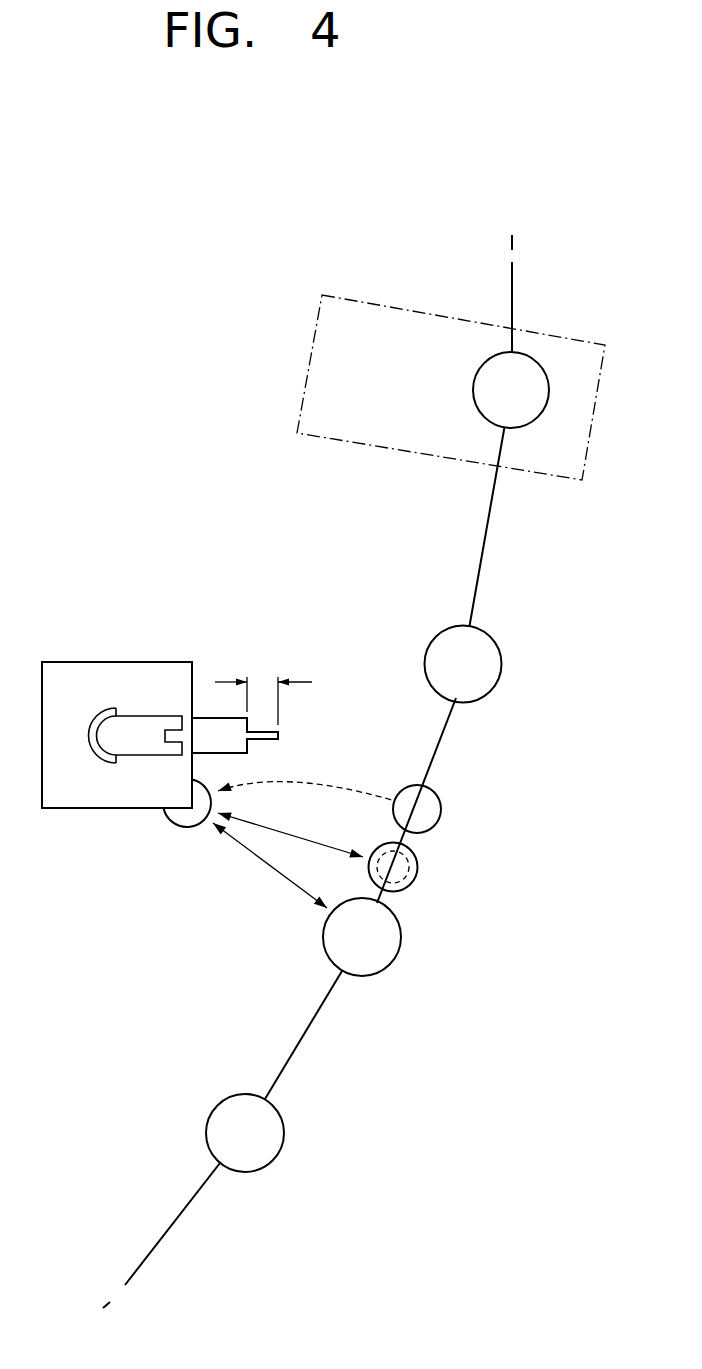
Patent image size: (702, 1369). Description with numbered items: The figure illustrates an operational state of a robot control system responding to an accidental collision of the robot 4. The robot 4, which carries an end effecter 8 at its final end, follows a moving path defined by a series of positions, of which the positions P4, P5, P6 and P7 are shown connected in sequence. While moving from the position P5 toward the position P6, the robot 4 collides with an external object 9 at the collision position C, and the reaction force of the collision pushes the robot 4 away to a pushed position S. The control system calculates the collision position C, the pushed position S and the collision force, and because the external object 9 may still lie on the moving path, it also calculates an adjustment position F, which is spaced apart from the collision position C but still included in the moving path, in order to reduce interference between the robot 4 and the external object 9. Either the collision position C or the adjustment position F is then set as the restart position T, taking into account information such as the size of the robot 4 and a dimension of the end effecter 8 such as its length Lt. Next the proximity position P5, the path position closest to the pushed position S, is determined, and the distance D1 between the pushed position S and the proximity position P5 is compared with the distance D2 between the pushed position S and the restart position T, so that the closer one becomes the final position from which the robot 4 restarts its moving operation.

The robot 4 is at (60, 650).
The end effecter 8 is at (268, 736).
The external object 9 is at (312, 342).
The pushed position S is at (185, 827).
The collision position C is at (441, 810).
The adjustment position F is at (410, 860).
The restart position T is at (417, 875).
The position P4 is at (245, 1151).
The proximity position P5 is at (368, 950).
The position P6 is at (467, 676).
The position P7 is at (512, 405).
The distance D1 is at (270, 865).
The distance D2 is at (305, 820).
The length Lt is at (262, 683).